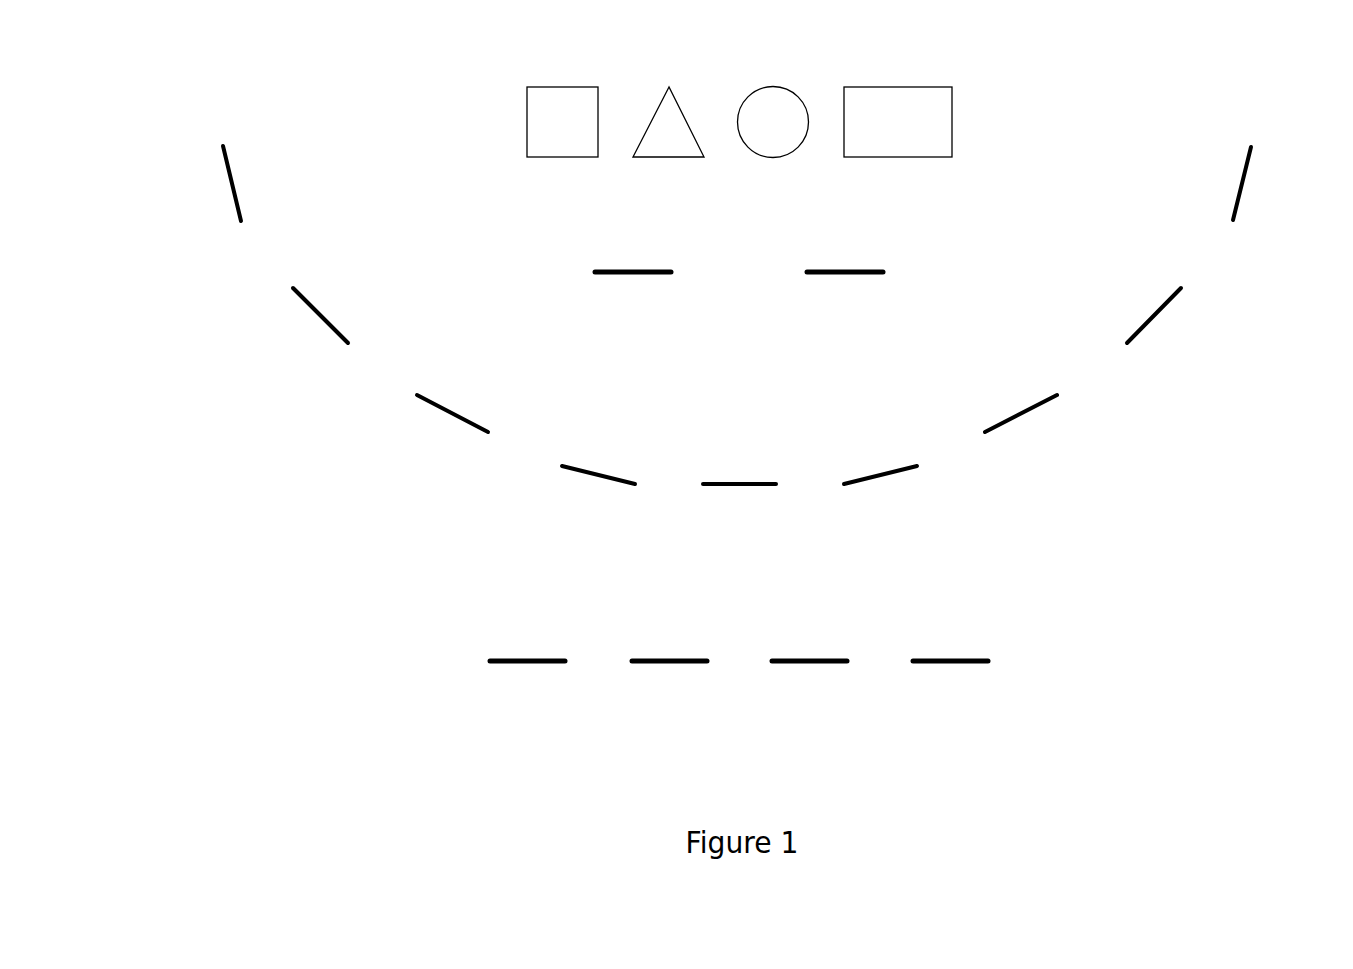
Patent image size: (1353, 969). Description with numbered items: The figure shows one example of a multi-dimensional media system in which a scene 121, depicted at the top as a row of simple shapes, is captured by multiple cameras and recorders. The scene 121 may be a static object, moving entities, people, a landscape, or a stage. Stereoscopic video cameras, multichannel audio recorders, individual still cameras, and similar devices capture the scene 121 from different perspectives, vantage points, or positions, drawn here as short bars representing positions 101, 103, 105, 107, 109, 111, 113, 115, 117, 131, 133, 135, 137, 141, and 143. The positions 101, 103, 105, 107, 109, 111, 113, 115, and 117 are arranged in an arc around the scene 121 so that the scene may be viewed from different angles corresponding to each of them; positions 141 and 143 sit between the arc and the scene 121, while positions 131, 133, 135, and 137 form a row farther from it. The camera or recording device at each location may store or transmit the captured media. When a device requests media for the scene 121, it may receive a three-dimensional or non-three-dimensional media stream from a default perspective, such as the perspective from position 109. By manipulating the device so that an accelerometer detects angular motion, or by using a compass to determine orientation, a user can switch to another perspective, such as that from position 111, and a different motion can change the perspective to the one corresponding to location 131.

The scene 121 is at (664, 53).
The position 101 is at (209, 183).
The position 103 is at (310, 316).
The position 105 is at (451, 422).
The position 107 is at (598, 493).
The position 109 is at (739, 507).
The position 111 is at (880, 493).
The position 113 is at (1024, 422).
The position 115 is at (1166, 315).
The position 117 is at (1267, 183).
The position 141 is at (633, 294).
The position 143 is at (845, 294).
The location 131 is at (527, 684).
The position 133 is at (669, 684).
The position 135 is at (809, 684).
The position 137 is at (950, 684).